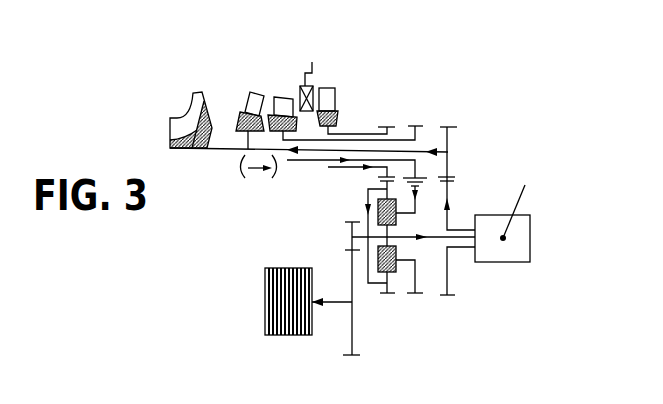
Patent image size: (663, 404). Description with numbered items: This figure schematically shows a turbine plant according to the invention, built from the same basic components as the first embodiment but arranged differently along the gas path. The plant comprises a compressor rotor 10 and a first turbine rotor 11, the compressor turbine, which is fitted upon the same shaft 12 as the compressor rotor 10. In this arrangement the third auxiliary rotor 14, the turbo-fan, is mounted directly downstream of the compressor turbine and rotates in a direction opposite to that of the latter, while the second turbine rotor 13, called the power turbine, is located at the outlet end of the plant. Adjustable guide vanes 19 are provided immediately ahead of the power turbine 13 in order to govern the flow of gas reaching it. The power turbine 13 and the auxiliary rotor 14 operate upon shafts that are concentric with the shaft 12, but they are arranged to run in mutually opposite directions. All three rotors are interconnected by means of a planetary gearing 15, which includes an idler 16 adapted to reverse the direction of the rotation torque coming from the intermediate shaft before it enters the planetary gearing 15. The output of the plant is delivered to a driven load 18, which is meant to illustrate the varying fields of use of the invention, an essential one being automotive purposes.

The compressor rotor 10 is at (193, 120).
The first turbine rotor 11 is at (250, 102).
The shaft 12 is at (223, 149).
The second turbine rotor 13 is at (327, 100).
The third auxiliary rotor 14 is at (278, 100).
The planetary gearing 15 is at (352, 210).
The idler 16 is at (427, 178).
The driven load 18 is at (278, 302).
The adjustable guide vanes 19 is at (308, 86).